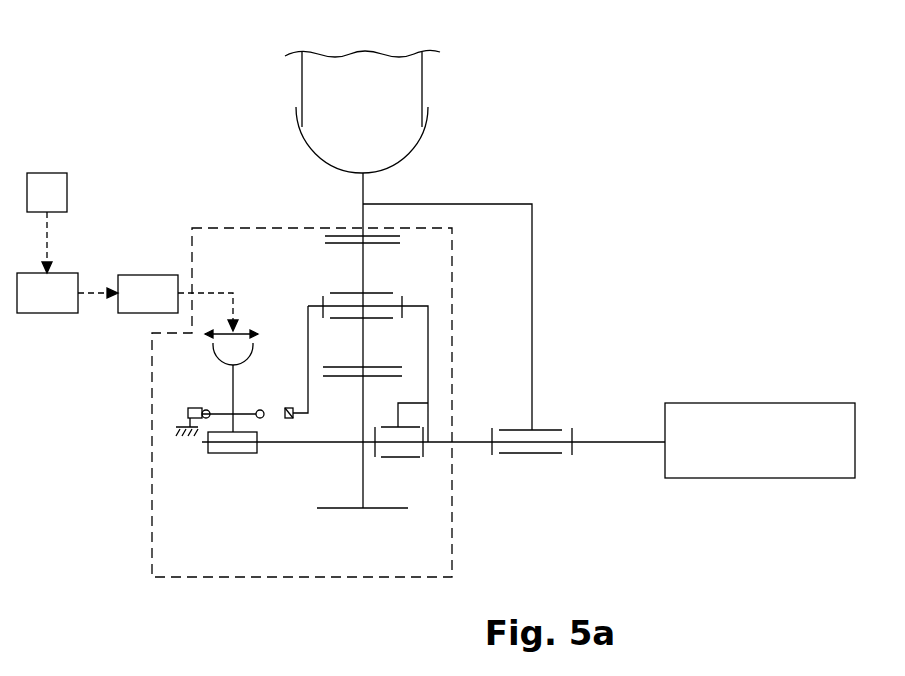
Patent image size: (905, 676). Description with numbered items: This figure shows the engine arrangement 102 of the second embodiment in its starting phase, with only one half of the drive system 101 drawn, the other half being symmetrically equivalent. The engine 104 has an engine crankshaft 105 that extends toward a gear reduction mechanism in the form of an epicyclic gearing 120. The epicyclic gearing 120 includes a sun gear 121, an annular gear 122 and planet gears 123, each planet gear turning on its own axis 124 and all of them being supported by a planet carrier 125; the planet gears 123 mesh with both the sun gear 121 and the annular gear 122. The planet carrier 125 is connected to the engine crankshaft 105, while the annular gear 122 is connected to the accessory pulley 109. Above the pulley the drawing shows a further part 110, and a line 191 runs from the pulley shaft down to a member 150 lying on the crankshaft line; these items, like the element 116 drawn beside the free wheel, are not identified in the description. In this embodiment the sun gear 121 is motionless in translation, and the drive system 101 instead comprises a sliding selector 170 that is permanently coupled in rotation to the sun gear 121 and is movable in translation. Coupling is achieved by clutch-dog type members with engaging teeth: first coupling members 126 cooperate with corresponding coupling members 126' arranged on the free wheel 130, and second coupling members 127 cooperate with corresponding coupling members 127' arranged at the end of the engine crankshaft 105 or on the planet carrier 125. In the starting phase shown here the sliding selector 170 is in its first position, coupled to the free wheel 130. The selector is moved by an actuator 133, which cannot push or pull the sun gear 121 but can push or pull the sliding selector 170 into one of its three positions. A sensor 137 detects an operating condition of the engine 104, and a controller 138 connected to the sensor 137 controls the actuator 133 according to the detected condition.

The drum 110 is at (327, 97).
The accessory pulley 109 is at (363, 192).
The connecting shaft 191 is at (532, 275).
The drive system 101 is at (465, 531).
The annular gear 122 is at (340, 236).
The axis 124 is at (363, 274).
The planet gears 123 is at (363, 331).
The planet carrier 125 is at (428, 352).
The epicyclic gearing 120 is at (445, 327).
The engine arrangement 102 is at (662, 207).
The engine crankshaft 105 is at (630, 442).
The clutch 150 is at (545, 430).
The engine 104 is at (742, 452).
The sun gear 121 is at (363, 486).
The sliding selector 170 is at (252, 447).
The coupling members 126' is at (230, 432).
The coupling members 127' is at (308, 446).
The second coupling members 127 is at (244, 391).
The first coupling members 126 is at (186, 383).
The free wheel 130 is at (190, 414).
The fixed support 116 is at (182, 433).
The sensor 137 is at (50, 186).
The controller 138 is at (55, 297).
The actuator 133 is at (148, 285).